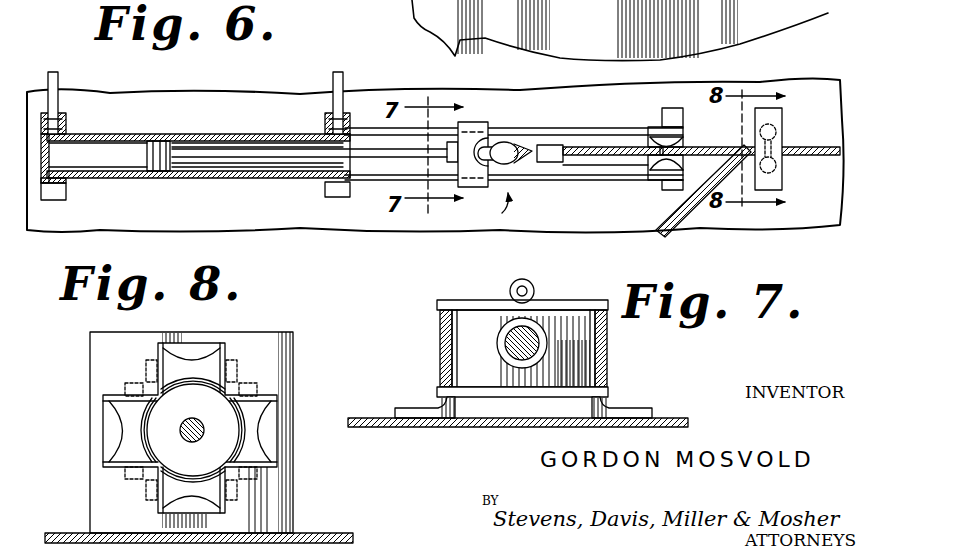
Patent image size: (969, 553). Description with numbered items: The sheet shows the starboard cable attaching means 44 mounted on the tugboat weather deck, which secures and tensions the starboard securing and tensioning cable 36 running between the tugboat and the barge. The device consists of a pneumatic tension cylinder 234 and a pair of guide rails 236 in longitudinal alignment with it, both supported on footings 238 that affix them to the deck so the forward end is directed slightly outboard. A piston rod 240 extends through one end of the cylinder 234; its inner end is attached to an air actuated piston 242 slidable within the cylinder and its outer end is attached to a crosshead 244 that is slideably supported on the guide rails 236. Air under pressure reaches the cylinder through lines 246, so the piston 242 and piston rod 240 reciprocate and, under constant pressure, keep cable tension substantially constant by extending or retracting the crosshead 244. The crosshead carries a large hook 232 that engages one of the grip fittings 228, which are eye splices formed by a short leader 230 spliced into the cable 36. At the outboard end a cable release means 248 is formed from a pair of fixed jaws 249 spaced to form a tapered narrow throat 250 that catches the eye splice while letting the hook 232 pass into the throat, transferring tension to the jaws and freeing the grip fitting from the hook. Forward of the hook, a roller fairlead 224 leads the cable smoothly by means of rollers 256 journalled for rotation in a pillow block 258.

In FIG. 6, the starboard securing and tensioning cable 36 is at (800, 148).
In FIG. 8, the starboard securing and tensioning cable 36 is at (184, 423).
In FIG. 6, the starboard cable attaching means 44 is at (488, 208).
In FIG. 6, the roller fairlead 224 is at (783, 178).
In FIG. 8, the roller fairlead 224 is at (267, 328).
In FIG. 6, the grip fitting 228 is at (518, 166).
In FIG. 6, the leader 230 is at (608, 158).
In FIG. 6, the hook 232 is at (512, 148).
In FIG. 7, the hook 232 is at (527, 284).
In FIG. 6, the pneumatic tension cylinder 234 is at (240, 141).
In FIG. 6, the guide rails 236 is at (579, 173).
In FIG. 7, the guide rails 236 is at (438, 332).
In FIG. 6, the footings 238 is at (60, 194).
In FIG. 7, the footings 238 is at (418, 409).
In FIG. 6, the piston rod 240 is at (392, 152).
In FIG. 7, the piston rod 240 is at (506, 333).
In FIG. 6, the air actuated piston 242 is at (152, 150).
In FIG. 6, the crosshead 244 is at (465, 122).
In FIG. 7, the crosshead 244 is at (440, 303).
In FIG. 6, the air lines 246 is at (56, 72).
In FIG. 6, the cable release means 248 is at (657, 173).
In FIG. 6, the fixed jaws 249 is at (680, 178).
In FIG. 6, the tapered narrow throat 250 is at (655, 142).
In FIG. 8, the rollers 256 is at (240, 410).
In FIG. 8, the pillow block 258 is at (90, 373).